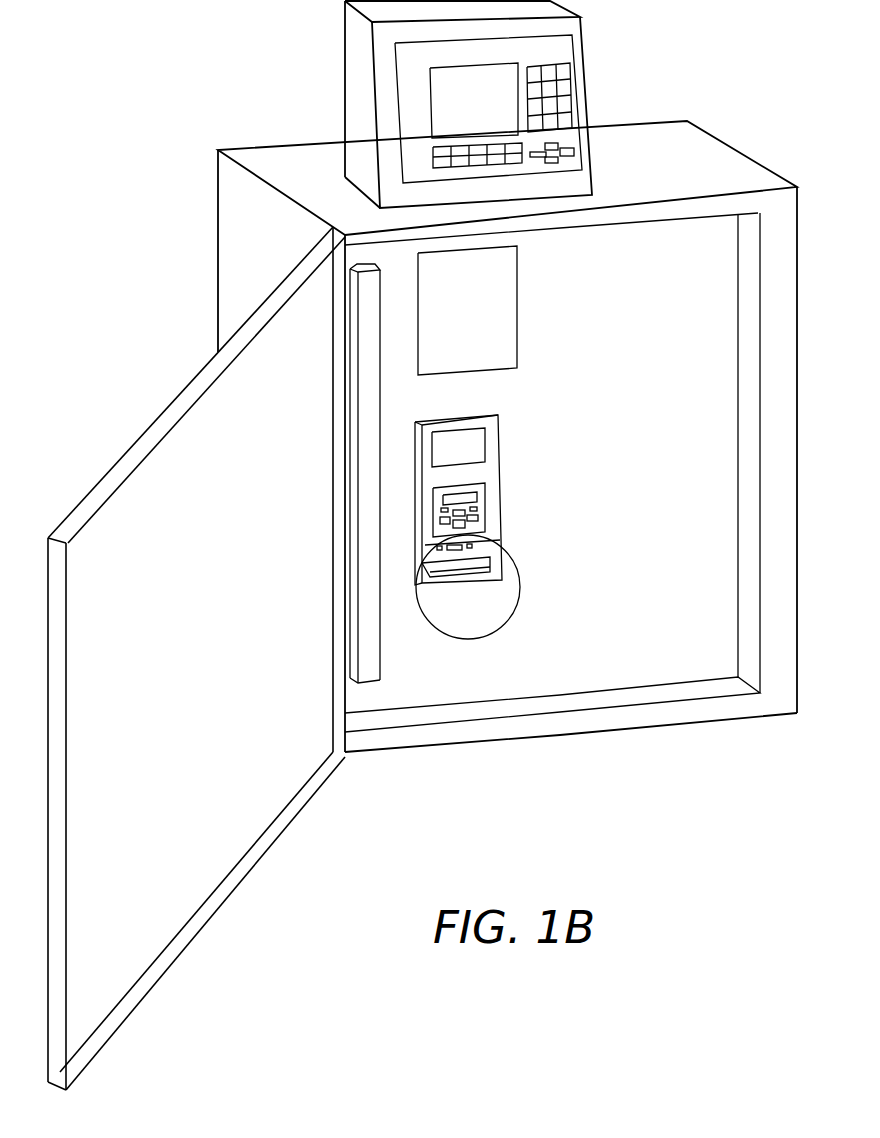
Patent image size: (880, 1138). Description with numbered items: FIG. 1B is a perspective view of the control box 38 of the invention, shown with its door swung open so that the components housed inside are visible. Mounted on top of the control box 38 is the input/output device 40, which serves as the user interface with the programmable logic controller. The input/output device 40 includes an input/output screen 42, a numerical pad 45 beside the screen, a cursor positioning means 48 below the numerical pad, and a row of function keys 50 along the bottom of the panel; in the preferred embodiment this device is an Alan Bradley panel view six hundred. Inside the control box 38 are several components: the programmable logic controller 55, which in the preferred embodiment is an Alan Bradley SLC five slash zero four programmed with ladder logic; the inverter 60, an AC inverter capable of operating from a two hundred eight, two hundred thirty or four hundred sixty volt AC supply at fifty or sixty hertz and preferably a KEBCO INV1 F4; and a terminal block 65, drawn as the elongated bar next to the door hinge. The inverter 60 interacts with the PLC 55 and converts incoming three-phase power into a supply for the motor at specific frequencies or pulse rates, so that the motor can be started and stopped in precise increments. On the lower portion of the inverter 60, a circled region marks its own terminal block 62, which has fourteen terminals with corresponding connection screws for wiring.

The control box 38 is at (690, 150).
The input/output device 40 is at (353, 56).
The input/output screen 42 is at (427, 102).
The numerical pad 45 is at (565, 83).
The cursor positioning means 48 is at (560, 140).
The function keys 50 is at (430, 155).
The programmable logic controller 55 is at (518, 303).
The inverter 60 is at (496, 632).
The terminal block 62 is at (435, 632).
The terminal block 65 is at (362, 685).